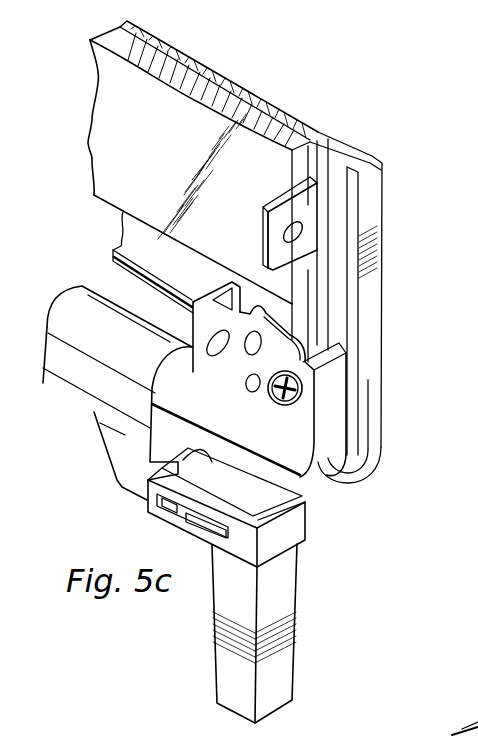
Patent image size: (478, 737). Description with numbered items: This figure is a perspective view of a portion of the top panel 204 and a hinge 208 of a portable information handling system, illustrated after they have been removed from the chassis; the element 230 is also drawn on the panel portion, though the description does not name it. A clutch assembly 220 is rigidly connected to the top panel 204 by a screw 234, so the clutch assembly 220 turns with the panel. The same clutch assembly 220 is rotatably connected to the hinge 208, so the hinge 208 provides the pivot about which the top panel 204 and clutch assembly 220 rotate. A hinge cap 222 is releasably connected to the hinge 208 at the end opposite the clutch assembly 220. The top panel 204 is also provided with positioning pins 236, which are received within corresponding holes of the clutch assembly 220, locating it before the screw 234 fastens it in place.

The top panel 204 is at (370, 293).
The hinge 208 is at (297, 585).
The clutch assembly 220 is at (299, 379).
The hinge cap 222 is at (307, 526).
The panel 230 is at (102, 122).
The screw 234 is at (272, 404).
The positioning pins 236 is at (246, 352).